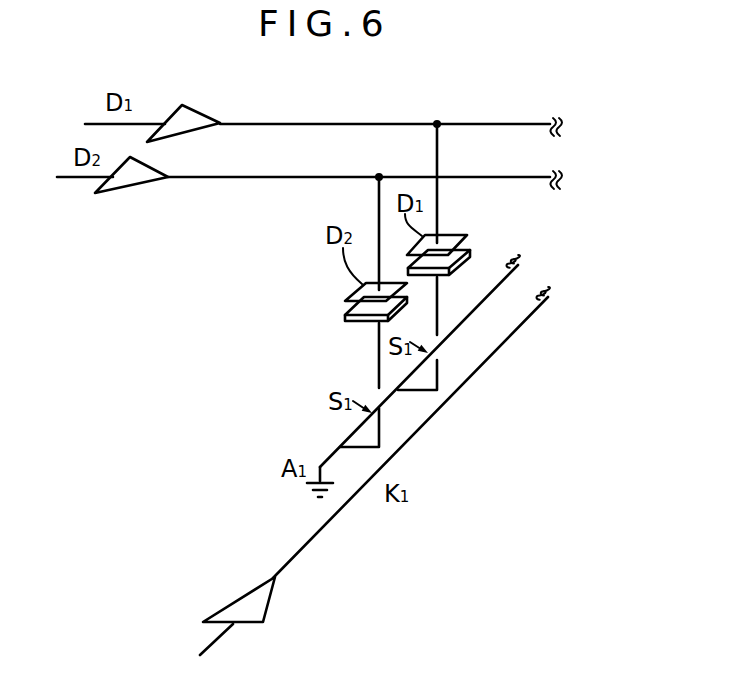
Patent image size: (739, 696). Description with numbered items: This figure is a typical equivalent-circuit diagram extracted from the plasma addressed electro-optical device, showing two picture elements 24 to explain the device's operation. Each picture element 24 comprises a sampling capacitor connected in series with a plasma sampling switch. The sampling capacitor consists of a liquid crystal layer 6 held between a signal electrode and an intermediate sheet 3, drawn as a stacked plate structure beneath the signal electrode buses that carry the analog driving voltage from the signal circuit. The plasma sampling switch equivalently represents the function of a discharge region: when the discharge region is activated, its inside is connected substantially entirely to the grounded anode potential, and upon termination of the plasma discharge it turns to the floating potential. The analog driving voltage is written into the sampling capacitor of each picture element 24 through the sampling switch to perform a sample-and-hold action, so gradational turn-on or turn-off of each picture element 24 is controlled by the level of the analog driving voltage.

The picture element 24 is at (420, 275).
The liquid crystal layer 6 is at (347, 303).
The intermediate sheet 3 is at (363, 322).